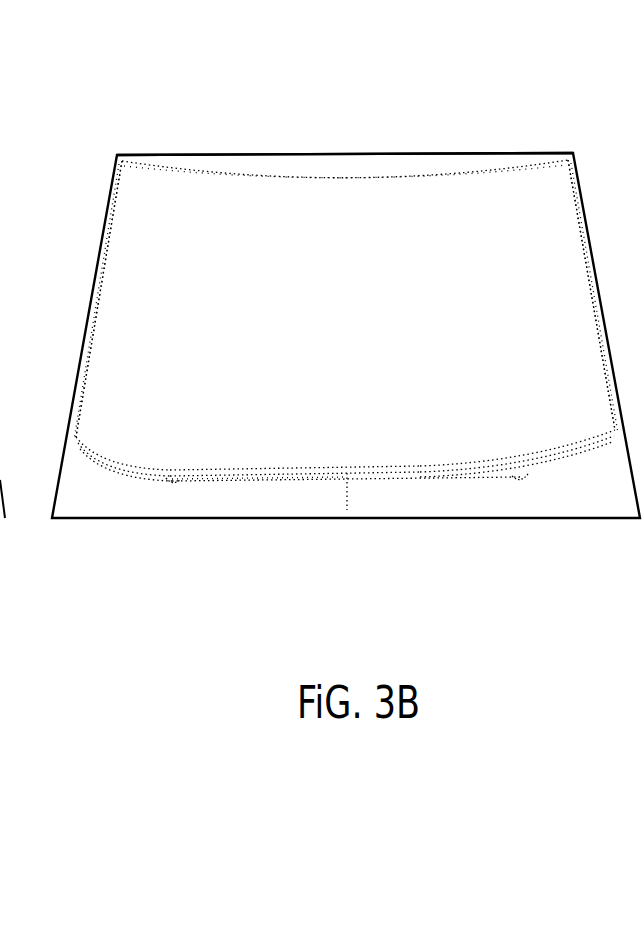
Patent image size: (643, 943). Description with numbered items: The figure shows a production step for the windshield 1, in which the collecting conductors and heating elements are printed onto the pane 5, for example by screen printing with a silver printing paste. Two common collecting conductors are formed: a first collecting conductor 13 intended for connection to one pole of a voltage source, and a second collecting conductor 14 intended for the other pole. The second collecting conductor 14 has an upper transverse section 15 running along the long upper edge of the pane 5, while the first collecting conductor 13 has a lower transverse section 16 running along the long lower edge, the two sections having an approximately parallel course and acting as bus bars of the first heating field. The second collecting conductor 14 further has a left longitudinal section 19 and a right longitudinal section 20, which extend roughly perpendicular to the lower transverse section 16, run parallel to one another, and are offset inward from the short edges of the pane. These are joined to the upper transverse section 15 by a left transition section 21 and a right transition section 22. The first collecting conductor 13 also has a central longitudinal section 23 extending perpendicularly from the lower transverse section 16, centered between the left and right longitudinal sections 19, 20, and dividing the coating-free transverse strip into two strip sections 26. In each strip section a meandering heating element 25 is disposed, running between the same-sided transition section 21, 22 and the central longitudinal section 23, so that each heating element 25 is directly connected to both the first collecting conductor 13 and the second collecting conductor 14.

The windshield 1 is at (253, 110).
The pane 5 is at (110, 205).
The first collecting conductor 13 is at (346, 479).
The second collecting conductor 14 is at (437, 175).
The upper transverse section 15 is at (345, 137).
The lower transverse section 16 is at (293, 467).
The left longitudinal section 19 is at (172, 481).
The right longitudinal section 20 is at (523, 480).
The left transition section 21 is at (105, 258).
The right transition section 22 is at (586, 245).
The central longitudinal section 23 is at (390, 522).
The heating element 25 is at (240, 475).
The strip sections 26 is at (210, 467).